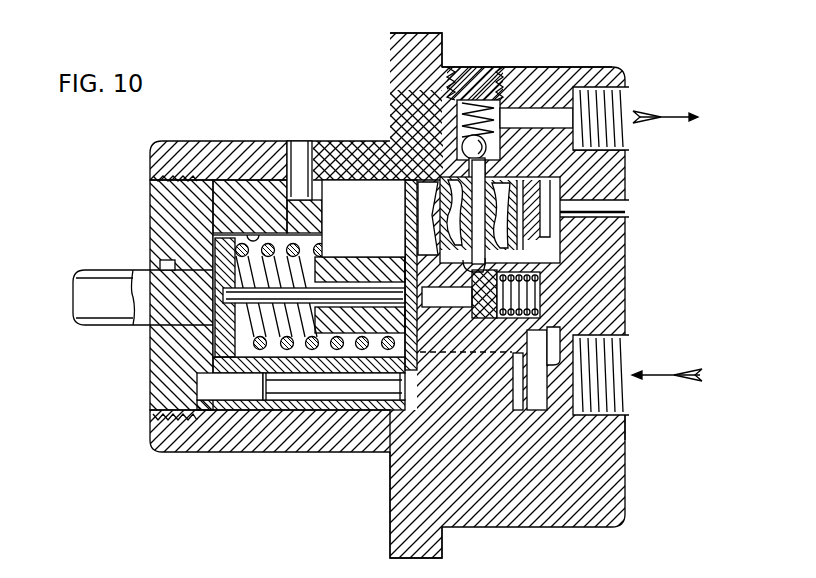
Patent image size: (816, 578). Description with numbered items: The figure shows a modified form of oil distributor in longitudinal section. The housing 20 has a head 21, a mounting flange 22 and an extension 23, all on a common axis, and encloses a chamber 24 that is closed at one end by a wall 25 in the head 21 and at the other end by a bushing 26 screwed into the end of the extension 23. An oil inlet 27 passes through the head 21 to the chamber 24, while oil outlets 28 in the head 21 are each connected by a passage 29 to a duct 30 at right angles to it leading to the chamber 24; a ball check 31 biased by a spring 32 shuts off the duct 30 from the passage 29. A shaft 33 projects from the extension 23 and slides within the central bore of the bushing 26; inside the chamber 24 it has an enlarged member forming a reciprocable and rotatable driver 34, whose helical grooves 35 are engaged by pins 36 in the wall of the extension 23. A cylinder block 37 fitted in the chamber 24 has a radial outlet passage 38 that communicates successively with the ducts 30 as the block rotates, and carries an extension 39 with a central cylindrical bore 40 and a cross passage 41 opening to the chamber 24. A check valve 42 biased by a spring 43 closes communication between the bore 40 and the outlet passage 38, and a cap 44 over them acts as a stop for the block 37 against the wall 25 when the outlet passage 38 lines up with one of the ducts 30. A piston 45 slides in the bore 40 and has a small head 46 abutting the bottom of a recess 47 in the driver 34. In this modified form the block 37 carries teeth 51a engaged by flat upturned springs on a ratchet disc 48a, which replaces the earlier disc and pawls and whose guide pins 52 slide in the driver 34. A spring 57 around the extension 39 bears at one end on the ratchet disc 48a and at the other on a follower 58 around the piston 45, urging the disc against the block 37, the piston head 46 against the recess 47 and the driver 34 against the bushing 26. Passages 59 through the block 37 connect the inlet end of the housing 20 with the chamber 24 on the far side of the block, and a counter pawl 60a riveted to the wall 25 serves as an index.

The housing 20 is at (390, 462).
The head 21 is at (560, 78).
The mounting flange 22 is at (398, 512).
The extension 23 is at (172, 449).
The chamber 24 is at (363, 218).
The wall 25 is at (618, 425).
The bushing 26 is at (158, 381).
The oil inlet 27 is at (612, 353).
The oil outlets 28 is at (615, 100).
The passage 29 is at (522, 117).
The duct 30 is at (390, 88).
The ball check 31 is at (390, 64).
The spring 32 is at (462, 100).
The shaft 33 is at (130, 327).
The driver 34 is at (215, 183).
The helical grooves 35 is at (318, 197).
The pins 36 is at (297, 143).
The cylinder block 37 is at (481, 412).
The outlet passage 38 is at (492, 178).
The extension 39 is at (332, 262).
The cylindrical bore 40 is at (447, 308).
The cross passage 41 is at (410, 330).
The check valve 42 is at (522, 278).
The spring 43 is at (500, 300).
The cap 44 is at (560, 336).
The piston 45 is at (260, 346).
The head 46 is at (160, 266).
The recess 47 is at (252, 232).
The ratchet disc 48a is at (402, 192).
The teeth 51a is at (634, 457).
The guide pins 52 is at (282, 392).
The spring 57 is at (240, 352).
The follower 58 is at (212, 250).
The passages 59 is at (462, 357).
The counter pawl 60a is at (575, 248).